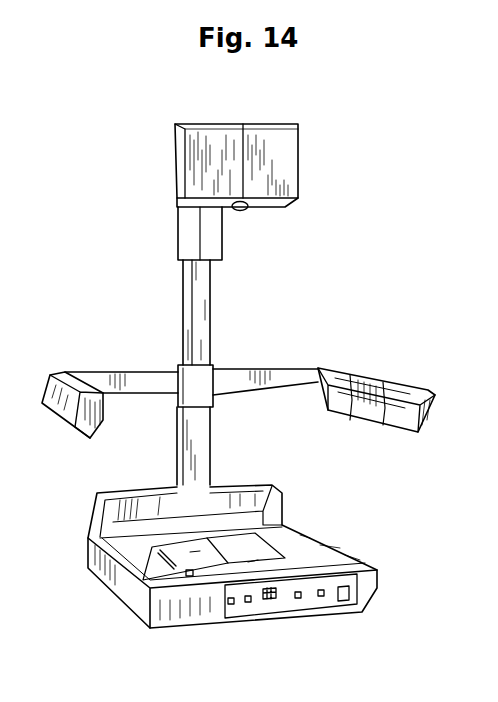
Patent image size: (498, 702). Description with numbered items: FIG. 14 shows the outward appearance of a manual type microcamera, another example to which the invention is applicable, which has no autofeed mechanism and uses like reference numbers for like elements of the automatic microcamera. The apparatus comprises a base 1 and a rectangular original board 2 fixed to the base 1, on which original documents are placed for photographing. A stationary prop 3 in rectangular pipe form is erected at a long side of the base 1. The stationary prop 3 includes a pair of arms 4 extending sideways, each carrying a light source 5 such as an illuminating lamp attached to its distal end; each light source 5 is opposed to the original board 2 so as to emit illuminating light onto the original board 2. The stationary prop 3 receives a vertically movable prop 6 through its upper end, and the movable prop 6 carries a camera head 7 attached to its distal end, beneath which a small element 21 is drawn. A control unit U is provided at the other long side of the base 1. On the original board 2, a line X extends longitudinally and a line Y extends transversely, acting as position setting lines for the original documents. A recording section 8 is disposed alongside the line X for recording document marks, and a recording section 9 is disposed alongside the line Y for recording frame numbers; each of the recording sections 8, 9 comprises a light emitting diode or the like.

The base 1 is at (120, 590).
The original board 2 is at (133, 548).
The stationary prop 3 is at (190, 440).
The arms 4 is at (110, 371).
The light source 5 is at (104, 422).
The movable prop 6 is at (198, 326).
The camera head 7 is at (300, 128).
The recording section 8 is at (190, 578).
The recording section 9 is at (158, 562).
The lens 21 is at (248, 208).
The control unit U is at (357, 590).
The line X is at (250, 565).
The line Y is at (190, 556).